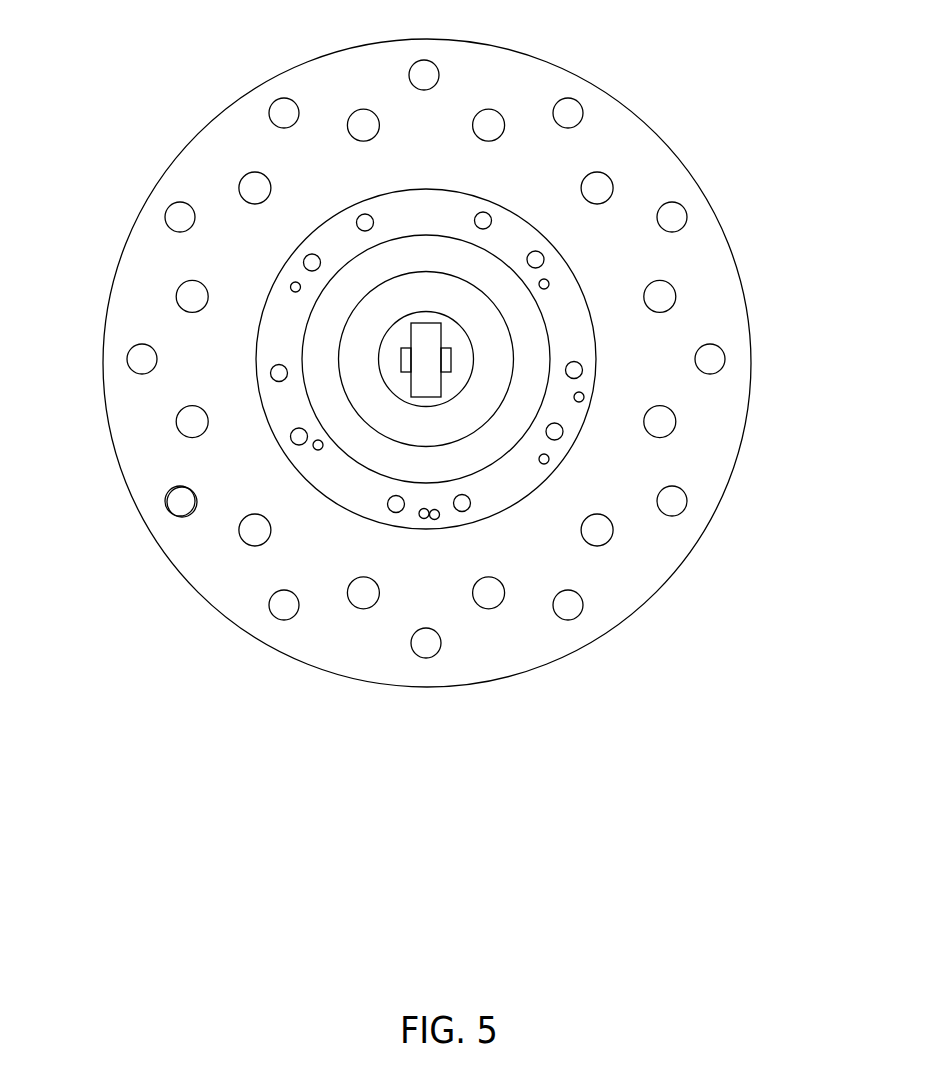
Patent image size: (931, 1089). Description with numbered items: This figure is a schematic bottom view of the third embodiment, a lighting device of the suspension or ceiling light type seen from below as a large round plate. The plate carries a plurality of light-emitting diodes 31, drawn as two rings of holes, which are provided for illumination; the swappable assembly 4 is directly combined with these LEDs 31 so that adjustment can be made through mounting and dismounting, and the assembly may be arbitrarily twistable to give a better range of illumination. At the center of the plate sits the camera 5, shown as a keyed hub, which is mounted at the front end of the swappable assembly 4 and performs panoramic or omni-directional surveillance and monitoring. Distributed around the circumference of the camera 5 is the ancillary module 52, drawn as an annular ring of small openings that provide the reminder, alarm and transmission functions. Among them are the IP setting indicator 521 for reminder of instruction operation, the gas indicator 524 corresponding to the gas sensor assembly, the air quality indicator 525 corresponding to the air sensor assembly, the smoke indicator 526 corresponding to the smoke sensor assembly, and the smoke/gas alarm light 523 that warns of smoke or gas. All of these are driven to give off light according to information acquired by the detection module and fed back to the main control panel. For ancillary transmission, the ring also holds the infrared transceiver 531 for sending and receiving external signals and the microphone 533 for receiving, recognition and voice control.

The swappable assembly 4 is at (700, 157).
The camera 5 is at (411, 335).
The light-emitting diodes 31 is at (181, 517).
The ancillary module 52 is at (282, 258).
The IP setting indicator 521 is at (546, 280).
The smoke/gas alarm light 523 is at (583, 368).
The gas indicator 524 is at (317, 450).
The air quality indicator 525 is at (362, 377).
The smoke indicator 526 is at (291, 284).
The infrared transceiver 531 is at (424, 518).
The microphone 533 is at (584, 397).